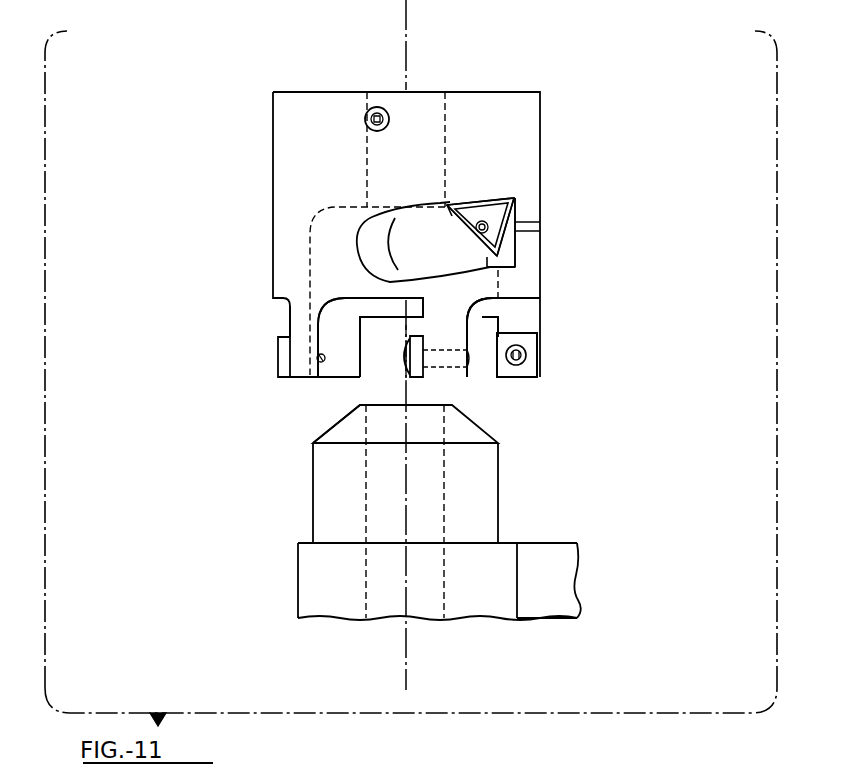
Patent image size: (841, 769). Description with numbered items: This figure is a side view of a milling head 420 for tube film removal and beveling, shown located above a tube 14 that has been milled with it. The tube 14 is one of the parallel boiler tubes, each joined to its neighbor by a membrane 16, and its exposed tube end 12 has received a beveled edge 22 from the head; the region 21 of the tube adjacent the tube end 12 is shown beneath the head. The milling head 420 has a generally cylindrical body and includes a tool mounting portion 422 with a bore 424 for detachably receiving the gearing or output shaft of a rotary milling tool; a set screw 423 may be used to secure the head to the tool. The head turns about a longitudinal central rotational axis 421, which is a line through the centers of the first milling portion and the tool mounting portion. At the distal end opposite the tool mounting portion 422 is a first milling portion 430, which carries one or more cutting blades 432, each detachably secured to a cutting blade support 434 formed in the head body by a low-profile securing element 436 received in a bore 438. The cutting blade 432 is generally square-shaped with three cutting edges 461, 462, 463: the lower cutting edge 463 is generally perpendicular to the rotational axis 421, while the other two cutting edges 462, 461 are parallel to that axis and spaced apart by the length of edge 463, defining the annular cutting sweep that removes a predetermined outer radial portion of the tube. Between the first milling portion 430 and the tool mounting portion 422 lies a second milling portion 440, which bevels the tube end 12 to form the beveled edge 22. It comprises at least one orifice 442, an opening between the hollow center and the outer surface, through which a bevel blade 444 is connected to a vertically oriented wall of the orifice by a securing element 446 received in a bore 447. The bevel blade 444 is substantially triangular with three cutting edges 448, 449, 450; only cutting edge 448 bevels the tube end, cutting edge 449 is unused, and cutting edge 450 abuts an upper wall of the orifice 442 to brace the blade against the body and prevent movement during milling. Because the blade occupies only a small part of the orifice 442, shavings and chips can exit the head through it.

The tube end 12 is at (362, 405).
The tube 14 is at (313, 581).
The membrane 16 is at (558, 553).
The spindle 21 is at (500, 470).
The beveled edge 22 is at (318, 440).
The milling head 420 is at (262, 84).
The rotational axis 421 is at (403, 27).
The tool mounting portion 422 is at (273, 148).
The set screw 423 is at (378, 107).
The bore 424 is at (444, 117).
The first milling portion 430 is at (617, 313).
The cutting blade 432 is at (277, 348).
The cutting blade support 434 is at (290, 327).
The securing element 436 is at (538, 354).
The bore 438 is at (467, 360).
The second milling portion 440 is at (617, 197).
The orifice 442 is at (372, 217).
The bevel blade 444 is at (500, 250).
The securing element 446 is at (505, 238).
The bore 447 is at (524, 210).
The cutting edge 448 is at (450, 222).
The cutting edge 449 is at (513, 199).
The cutting edge 450 is at (494, 200).
The cutting edge 461 is at (493, 342).
The cutting edge 462 is at (277, 355).
The lower cutting edge 463 is at (290, 375).